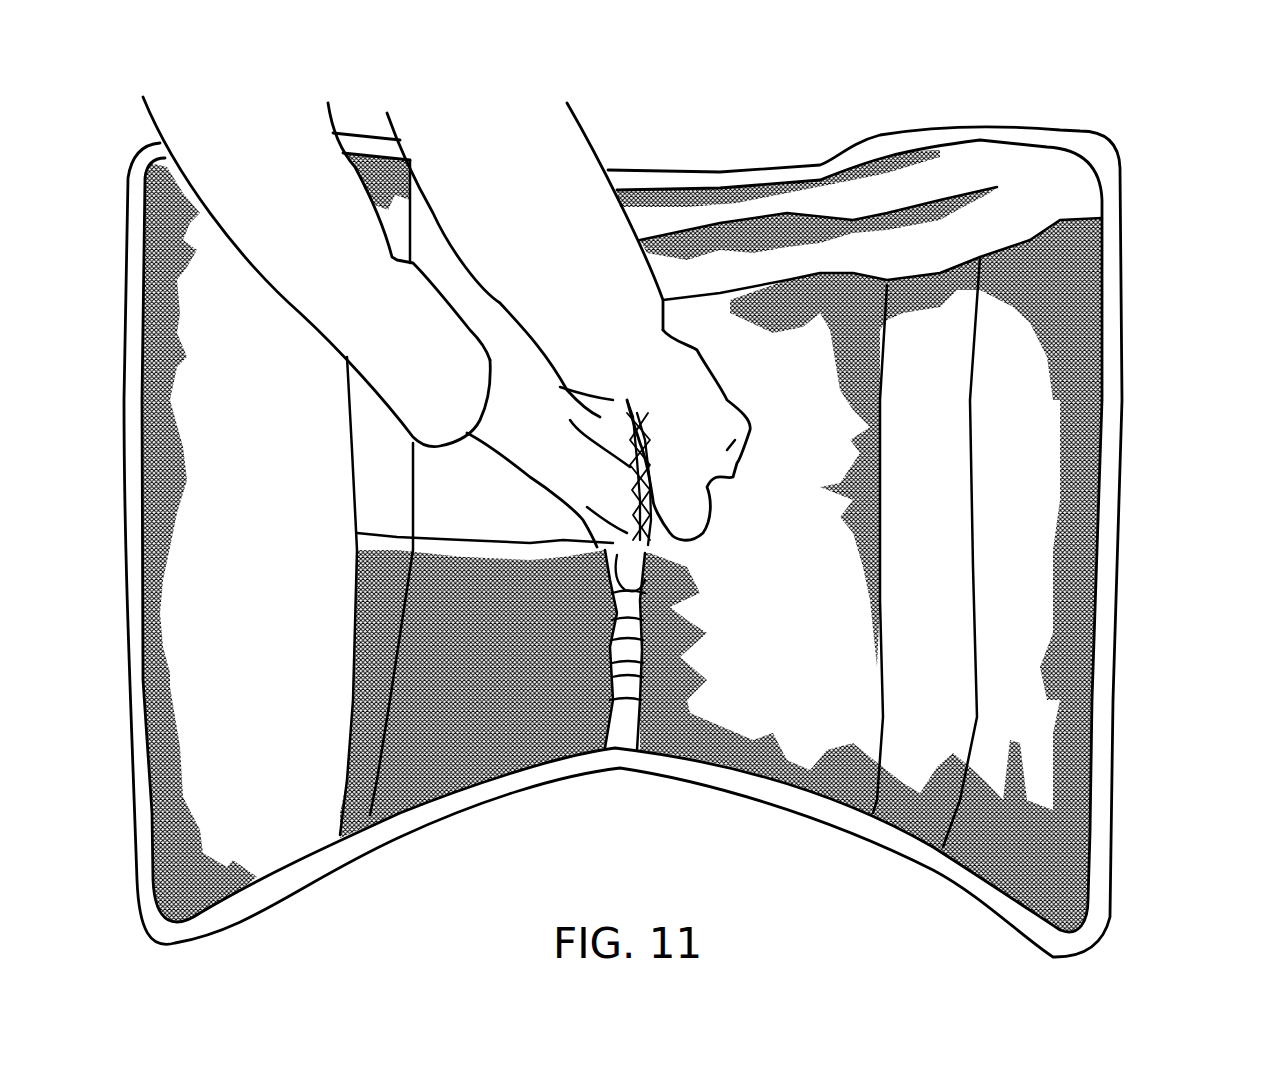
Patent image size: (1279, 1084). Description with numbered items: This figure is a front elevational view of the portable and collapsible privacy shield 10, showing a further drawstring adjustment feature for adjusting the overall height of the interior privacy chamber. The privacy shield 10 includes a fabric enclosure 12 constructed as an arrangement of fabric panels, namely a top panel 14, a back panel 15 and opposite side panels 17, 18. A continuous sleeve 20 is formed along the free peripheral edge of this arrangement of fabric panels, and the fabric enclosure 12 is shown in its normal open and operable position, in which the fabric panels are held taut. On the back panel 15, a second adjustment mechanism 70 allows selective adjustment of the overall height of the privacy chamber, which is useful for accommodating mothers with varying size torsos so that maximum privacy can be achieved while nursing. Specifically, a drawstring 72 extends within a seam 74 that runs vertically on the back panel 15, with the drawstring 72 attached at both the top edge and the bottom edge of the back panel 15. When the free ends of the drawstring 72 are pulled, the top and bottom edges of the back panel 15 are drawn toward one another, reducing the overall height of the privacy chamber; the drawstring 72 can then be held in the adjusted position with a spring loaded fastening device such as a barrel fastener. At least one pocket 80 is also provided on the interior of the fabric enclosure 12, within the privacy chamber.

The portable and collapsible privacy shield 10 is at (1168, 120).
The fabric enclosure 12 is at (1017, 393).
The top panel 14 is at (733, 217).
The back panel 15 is at (810, 707).
The side panel 17 is at (1003, 533).
The side panel 18 is at (207, 638).
The continuous sleeve 20 is at (1070, 133).
The second adjustment mechanism 70 is at (620, 488).
The drawstring 72 is at (643, 563).
The seam 74 is at (650, 638).
The pocket 80 is at (430, 527).